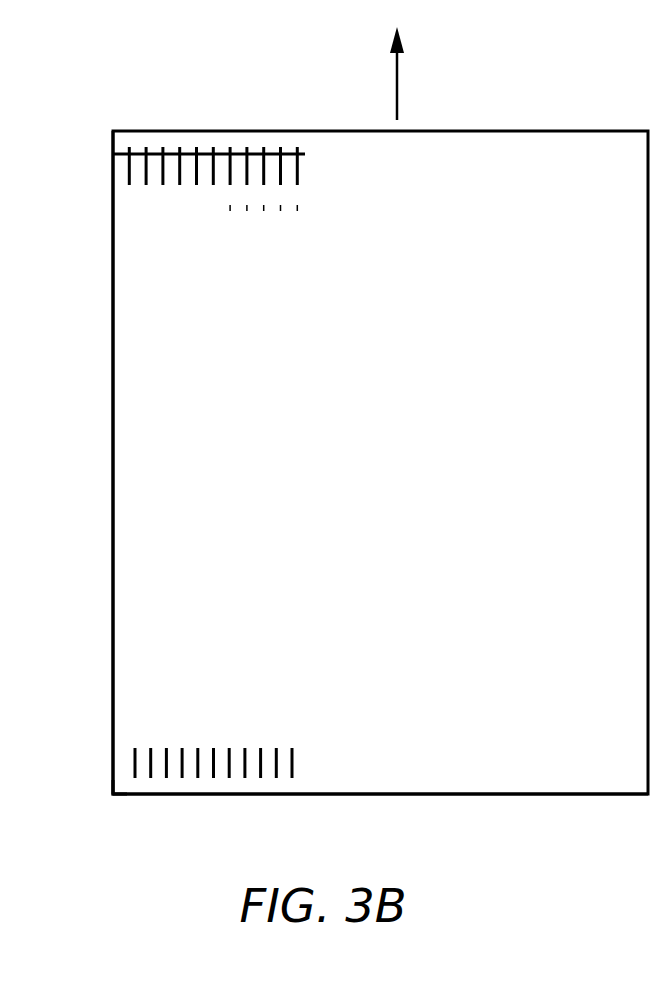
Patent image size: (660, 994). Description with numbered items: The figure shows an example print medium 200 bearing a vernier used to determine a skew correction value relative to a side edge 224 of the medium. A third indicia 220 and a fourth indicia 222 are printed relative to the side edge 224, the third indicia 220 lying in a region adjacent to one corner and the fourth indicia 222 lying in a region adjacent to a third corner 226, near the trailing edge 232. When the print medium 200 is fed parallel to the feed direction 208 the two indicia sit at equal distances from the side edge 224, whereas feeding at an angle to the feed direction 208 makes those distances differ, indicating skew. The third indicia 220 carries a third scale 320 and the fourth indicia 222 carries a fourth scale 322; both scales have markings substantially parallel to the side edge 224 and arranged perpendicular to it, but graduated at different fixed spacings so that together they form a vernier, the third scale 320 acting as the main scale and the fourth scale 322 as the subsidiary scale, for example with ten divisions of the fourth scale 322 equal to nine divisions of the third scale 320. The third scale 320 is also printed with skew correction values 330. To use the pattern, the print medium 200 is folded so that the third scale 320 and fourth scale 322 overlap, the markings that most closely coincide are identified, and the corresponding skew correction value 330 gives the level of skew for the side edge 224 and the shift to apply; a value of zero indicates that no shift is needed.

The print medium 200 is at (360, 317).
The feed direction 208 is at (397, 84).
The third indicia 220 is at (251, 170).
The fourth indicia 222 is at (265, 802).
The side edge 224 is at (112, 700).
The third corner 226 is at (104, 802).
The trailing edge 232 is at (457, 796).
The third scale 320 is at (298, 173).
The fourth scale 322 is at (307, 767).
The skew correction values 330 is at (217, 207).